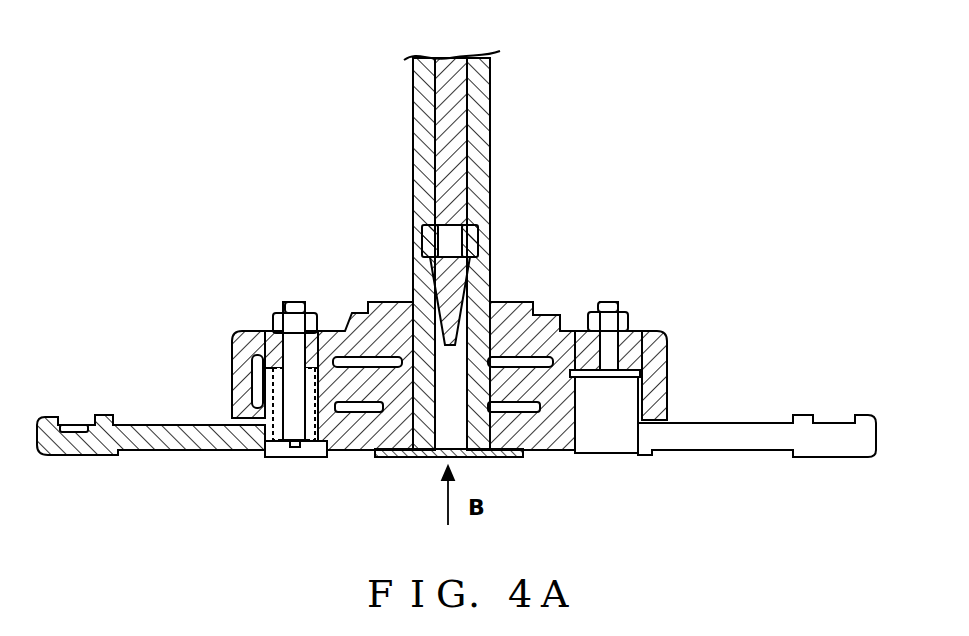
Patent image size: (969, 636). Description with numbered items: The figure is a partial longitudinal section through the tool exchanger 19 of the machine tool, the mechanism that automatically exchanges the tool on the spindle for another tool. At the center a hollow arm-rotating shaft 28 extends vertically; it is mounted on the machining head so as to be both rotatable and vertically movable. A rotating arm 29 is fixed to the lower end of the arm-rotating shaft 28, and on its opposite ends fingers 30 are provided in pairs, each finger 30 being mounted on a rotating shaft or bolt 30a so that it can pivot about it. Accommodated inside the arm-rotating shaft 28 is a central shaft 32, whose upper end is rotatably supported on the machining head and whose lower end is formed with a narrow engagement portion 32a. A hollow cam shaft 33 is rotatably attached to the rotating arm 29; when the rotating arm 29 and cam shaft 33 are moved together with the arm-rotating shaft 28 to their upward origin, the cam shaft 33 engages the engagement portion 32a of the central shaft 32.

The tool exchanger 19 is at (456, 356).
The arm-rotating shaft 28 is at (490, 100).
The rotating arm 29 is at (655, 331).
The finger 30 is at (162, 455).
The rotating shaft or bolt 30a is at (284, 458).
The central shaft 32 is at (455, 176).
The engagement portion 32a is at (462, 279).
The cam shaft 33 is at (428, 237).